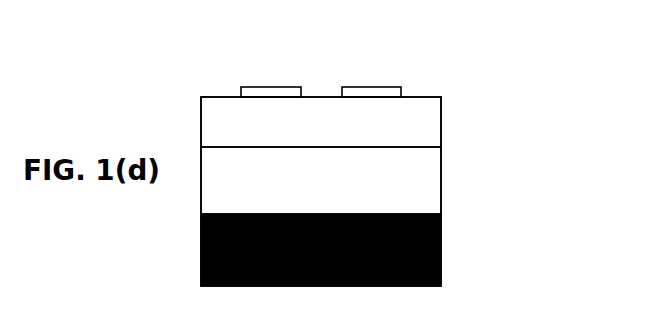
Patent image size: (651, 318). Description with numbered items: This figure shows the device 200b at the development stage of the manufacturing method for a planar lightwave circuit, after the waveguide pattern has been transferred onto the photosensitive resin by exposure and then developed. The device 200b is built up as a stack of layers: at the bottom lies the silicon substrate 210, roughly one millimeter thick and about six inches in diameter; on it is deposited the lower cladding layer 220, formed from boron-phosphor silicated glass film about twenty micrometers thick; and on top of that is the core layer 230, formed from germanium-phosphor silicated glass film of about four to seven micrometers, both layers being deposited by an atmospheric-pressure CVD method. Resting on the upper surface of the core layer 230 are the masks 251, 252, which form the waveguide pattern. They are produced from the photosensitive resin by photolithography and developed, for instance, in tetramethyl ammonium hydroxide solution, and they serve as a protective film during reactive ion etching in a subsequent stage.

The device 200b is at (183, 242).
The silicon substrate 210 is at (441, 250).
The lower cladding layer 220 is at (415, 190).
The core layer 230 is at (413, 130).
The mask 251 is at (267, 87).
The mask 252 is at (385, 92).